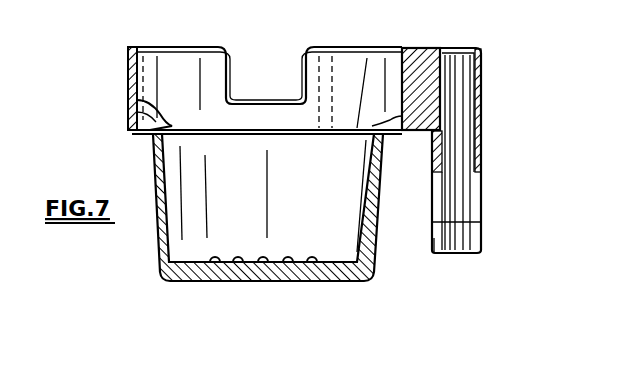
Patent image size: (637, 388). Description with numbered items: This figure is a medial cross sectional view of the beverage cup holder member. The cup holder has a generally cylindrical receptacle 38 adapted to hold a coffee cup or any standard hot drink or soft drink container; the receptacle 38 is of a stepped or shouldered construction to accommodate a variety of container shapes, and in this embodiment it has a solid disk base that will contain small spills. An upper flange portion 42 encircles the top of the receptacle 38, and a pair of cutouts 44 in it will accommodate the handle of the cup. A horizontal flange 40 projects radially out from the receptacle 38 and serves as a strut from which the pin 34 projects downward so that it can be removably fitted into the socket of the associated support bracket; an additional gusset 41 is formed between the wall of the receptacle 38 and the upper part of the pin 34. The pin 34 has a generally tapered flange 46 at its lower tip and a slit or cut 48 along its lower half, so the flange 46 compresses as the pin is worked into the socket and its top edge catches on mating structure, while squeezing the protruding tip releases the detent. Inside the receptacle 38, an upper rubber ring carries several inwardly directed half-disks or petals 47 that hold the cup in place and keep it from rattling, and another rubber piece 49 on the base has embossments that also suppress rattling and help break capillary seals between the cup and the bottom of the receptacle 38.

The pin 34 is at (480, 98).
The receptacle 38 is at (154, 165).
The horizontal flange 40 is at (427, 50).
The gusset 41 is at (443, 77).
The upper flange portion 42 is at (129, 63).
The cutouts 44 is at (268, 62).
The tapered flange 46 is at (476, 234).
The half-disks or petals 47 is at (140, 98).
The slit or cut 48 is at (477, 190).
The rubber piece 49 is at (272, 270).